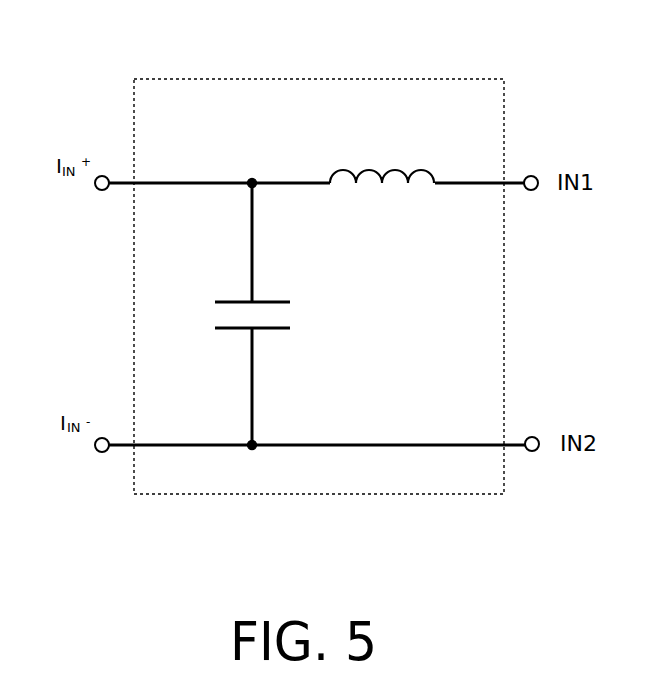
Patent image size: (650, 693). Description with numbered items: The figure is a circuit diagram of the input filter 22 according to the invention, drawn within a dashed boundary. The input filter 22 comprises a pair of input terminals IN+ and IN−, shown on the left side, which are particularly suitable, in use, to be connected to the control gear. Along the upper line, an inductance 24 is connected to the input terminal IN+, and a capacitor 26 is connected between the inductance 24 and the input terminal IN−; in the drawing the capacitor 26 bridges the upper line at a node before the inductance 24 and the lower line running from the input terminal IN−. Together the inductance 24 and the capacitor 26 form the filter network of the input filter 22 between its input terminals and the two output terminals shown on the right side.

The input filter 22 is at (146, 79).
The inductance 24 is at (348, 168).
The capacitor 26 is at (290, 302).